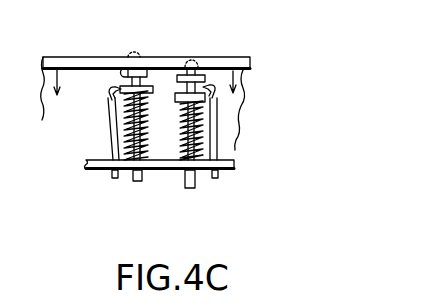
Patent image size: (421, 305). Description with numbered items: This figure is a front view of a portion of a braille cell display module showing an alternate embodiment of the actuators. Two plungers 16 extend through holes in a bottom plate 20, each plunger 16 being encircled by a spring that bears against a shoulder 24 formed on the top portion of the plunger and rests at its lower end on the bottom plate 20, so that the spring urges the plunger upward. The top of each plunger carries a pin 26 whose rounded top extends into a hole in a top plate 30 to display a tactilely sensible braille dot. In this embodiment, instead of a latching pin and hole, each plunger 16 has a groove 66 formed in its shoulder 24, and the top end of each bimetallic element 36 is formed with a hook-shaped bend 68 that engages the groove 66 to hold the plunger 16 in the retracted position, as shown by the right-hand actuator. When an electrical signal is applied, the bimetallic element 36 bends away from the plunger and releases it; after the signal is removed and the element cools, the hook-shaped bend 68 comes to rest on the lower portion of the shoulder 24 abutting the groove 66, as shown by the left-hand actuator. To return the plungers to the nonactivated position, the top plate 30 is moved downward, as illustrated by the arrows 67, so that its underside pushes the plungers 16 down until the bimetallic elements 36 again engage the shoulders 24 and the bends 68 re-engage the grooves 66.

The plunger 16 is at (183, 180).
The bottom plate 20 is at (92, 172).
The shoulder 24 is at (207, 72).
The pin 26 is at (139, 54).
The top plate 30 is at (65, 62).
The bimetallic element 36 is at (110, 128).
The groove 66 is at (118, 69).
The arrows 67 is at (43, 83).
The hook-shaped bend 68 is at (107, 88).